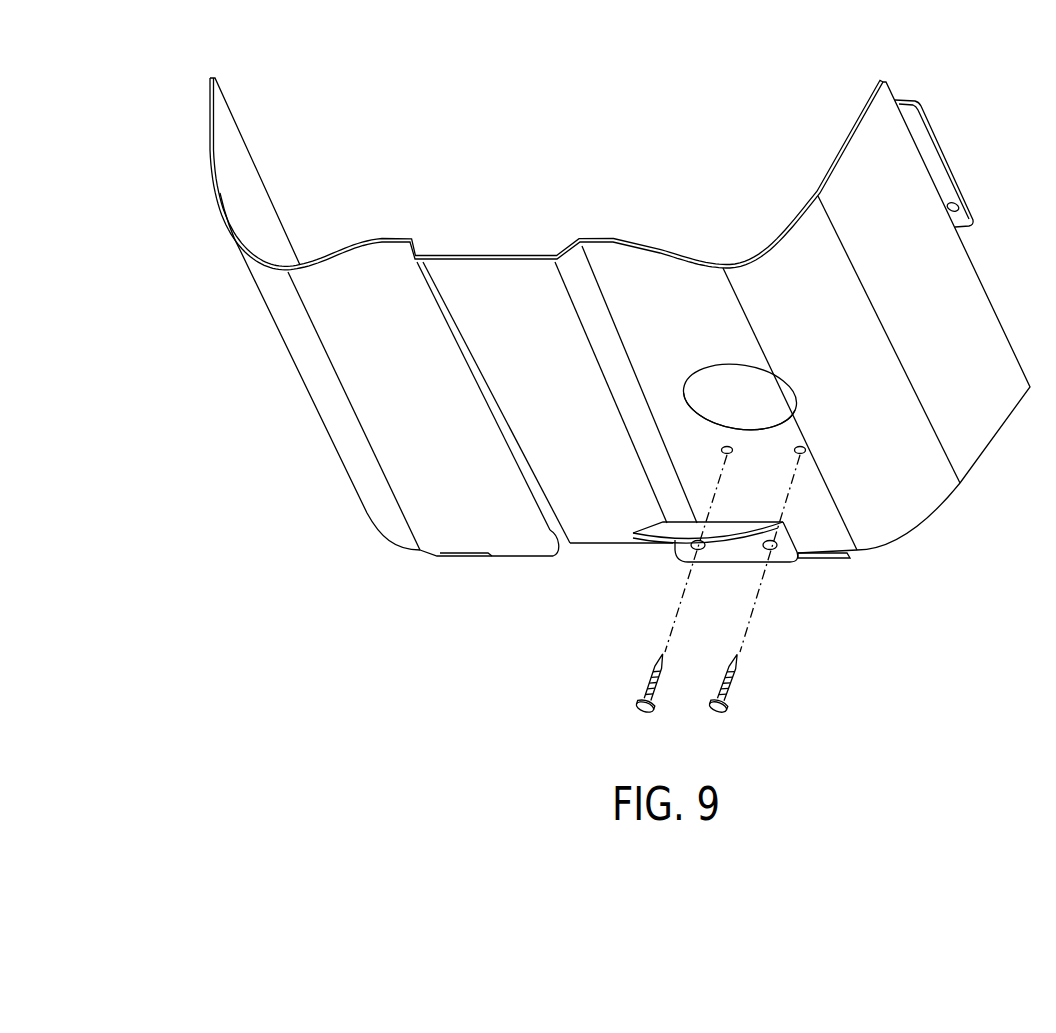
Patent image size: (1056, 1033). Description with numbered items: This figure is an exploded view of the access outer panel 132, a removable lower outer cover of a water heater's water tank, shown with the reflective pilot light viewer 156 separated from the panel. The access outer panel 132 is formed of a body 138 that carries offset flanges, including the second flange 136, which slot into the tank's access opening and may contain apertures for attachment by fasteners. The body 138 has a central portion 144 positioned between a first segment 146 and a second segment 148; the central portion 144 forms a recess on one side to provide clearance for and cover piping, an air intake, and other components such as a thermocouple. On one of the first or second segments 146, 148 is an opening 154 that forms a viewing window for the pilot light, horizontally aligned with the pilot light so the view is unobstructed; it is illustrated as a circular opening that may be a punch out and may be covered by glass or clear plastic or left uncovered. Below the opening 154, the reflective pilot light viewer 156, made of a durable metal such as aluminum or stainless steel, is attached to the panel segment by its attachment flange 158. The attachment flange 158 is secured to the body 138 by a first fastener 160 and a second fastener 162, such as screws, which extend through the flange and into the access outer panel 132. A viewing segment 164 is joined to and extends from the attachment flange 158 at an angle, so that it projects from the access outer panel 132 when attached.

The access outer panel 132 is at (381, 549).
The second flange 136 is at (937, 173).
The body 138 is at (367, 280).
The central portion 144 is at (515, 287).
The first segment 146 is at (318, 380).
The second segment 148 is at (903, 498).
The opening 154 is at (727, 390).
The reflective pilot light viewer 156 is at (666, 549).
The attachment flange 158 is at (777, 553).
The first fastener 160 is at (650, 673).
The second fastener 162 is at (728, 687).
The viewing segment 164 is at (717, 527).